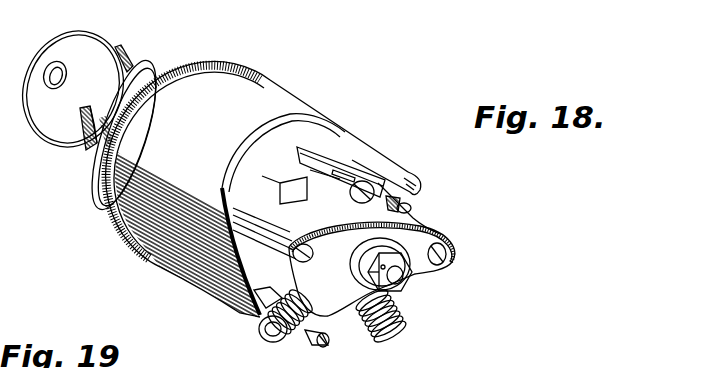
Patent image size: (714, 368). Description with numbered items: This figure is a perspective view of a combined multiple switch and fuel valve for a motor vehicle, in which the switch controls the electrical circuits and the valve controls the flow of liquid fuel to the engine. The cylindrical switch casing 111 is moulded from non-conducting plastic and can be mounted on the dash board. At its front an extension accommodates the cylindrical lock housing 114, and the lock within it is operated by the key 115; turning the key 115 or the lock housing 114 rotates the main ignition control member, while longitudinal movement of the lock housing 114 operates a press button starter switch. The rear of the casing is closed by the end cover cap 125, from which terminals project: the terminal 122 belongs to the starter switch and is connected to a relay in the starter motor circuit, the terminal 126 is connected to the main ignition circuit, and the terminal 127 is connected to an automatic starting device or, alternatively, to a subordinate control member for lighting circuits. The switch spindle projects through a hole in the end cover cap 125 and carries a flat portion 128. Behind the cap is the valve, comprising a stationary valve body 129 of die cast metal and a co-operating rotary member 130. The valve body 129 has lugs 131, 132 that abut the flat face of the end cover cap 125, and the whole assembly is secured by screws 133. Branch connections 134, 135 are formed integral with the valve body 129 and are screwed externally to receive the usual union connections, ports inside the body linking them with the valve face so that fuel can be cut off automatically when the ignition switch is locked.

The cylindrical switch casing 111 is at (243, 107).
The cylindrical lock housing 114 is at (82, 150).
The key 115 is at (75, 47).
The terminal 122 is at (383, 168).
The end cover cap 125 is at (340, 160).
The terminal 126 is at (313, 157).
The terminal 127 is at (404, 207).
The flat portion 128 is at (325, 342).
The stationary valve body 129 is at (303, 200).
The rotary valve member 130 is at (307, 177).
The lug 131 is at (245, 215).
The lug 132 is at (300, 272).
The screws 133 is at (447, 253).
The branch connection 134 is at (402, 327).
The branch connection 135 is at (285, 333).